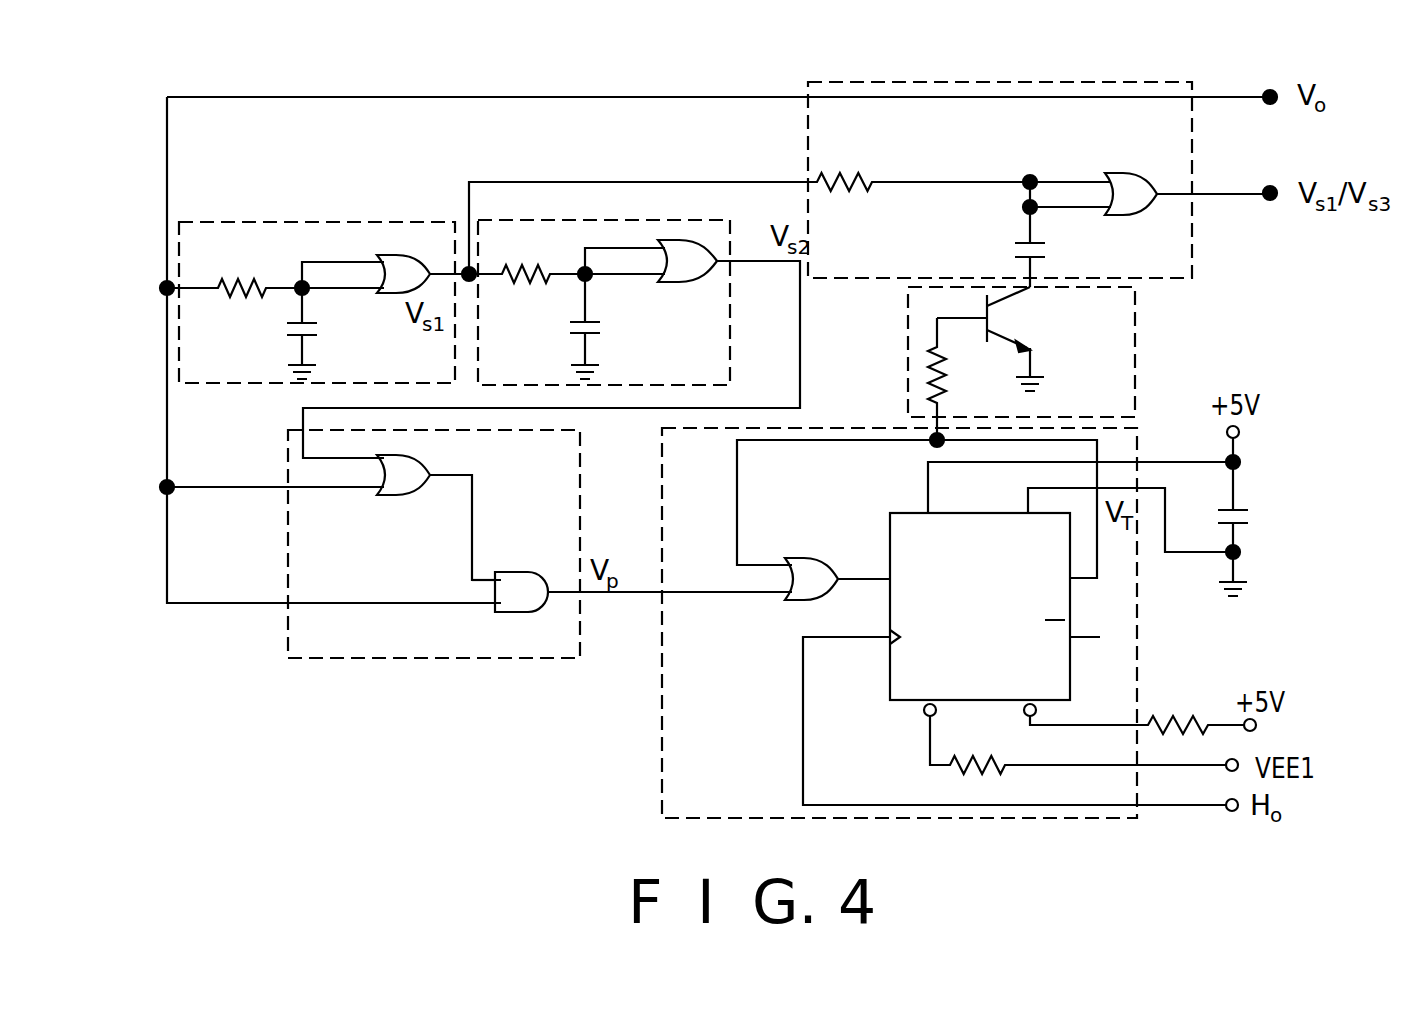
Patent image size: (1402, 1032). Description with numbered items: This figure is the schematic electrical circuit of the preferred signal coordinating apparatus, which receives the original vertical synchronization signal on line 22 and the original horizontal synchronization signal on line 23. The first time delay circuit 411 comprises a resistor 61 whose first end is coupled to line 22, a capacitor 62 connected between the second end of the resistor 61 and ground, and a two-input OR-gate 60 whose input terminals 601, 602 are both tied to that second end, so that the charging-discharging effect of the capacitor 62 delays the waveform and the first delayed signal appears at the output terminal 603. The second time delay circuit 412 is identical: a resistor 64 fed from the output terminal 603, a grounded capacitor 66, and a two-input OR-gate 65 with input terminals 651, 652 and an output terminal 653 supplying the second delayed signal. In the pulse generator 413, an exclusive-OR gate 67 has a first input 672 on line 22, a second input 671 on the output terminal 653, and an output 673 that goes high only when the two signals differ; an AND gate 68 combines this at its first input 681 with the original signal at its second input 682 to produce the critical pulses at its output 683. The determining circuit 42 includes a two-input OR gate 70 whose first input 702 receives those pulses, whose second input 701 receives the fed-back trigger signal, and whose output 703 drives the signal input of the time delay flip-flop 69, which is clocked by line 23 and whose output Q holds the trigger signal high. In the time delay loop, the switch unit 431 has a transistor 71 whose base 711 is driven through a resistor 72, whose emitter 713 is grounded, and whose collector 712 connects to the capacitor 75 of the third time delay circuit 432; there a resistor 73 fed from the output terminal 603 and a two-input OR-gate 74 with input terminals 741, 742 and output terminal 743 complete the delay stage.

The line 22 is at (348, 98).
The line 23 is at (875, 818).
The determining circuit 42 is at (1125, 673).
The two-input OR-gate 60 is at (400, 268).
The input terminal 601 is at (337, 262).
The input terminal 602 is at (330, 284).
The output terminal 603 is at (437, 272).
The resistor 61 is at (225, 284).
The capacitor 62 is at (323, 333).
The resistor 64 is at (510, 288).
The two-input OR-gate 65 is at (673, 285).
The input terminal 651 is at (648, 243).
The input terminal 652 is at (612, 272).
The output terminal 653 is at (718, 246).
The capacitor 66 is at (600, 337).
The exclusive-OR gate 67 is at (402, 492).
The second input 671 is at (330, 458).
The first input 672 is at (340, 487).
The output 673 is at (463, 473).
The AND gate 68 is at (510, 576).
The first input 681 is at (478, 582).
The second input 682 is at (455, 606).
The output 683 is at (563, 590).
The time delay flip-flop 69 is at (963, 527).
The two-input OR gate 70 is at (803, 563).
The second input 701 is at (778, 561).
The first input 702 is at (760, 593).
The output 703 is at (862, 576).
The transistor 71 is at (987, 297).
The base 711 is at (960, 315).
The collector 712 is at (1018, 300).
The emitter 713 is at (1037, 367).
The resistor 72 is at (928, 375).
The resistor 73 is at (853, 190).
The two-input OR-gate 74 is at (1145, 212).
The input terminal 741 is at (1093, 180).
The input terminal 742 is at (1080, 207).
The output terminal 743 is at (1177, 187).
The capacitor 75 is at (1017, 252).
The first time delay circuit 411 is at (228, 222).
The second time delay circuit 412 is at (498, 220).
The pulse generator 413 is at (327, 658).
The switch unit 431 is at (1125, 323).
The third time delay circuit 432 is at (815, 122).